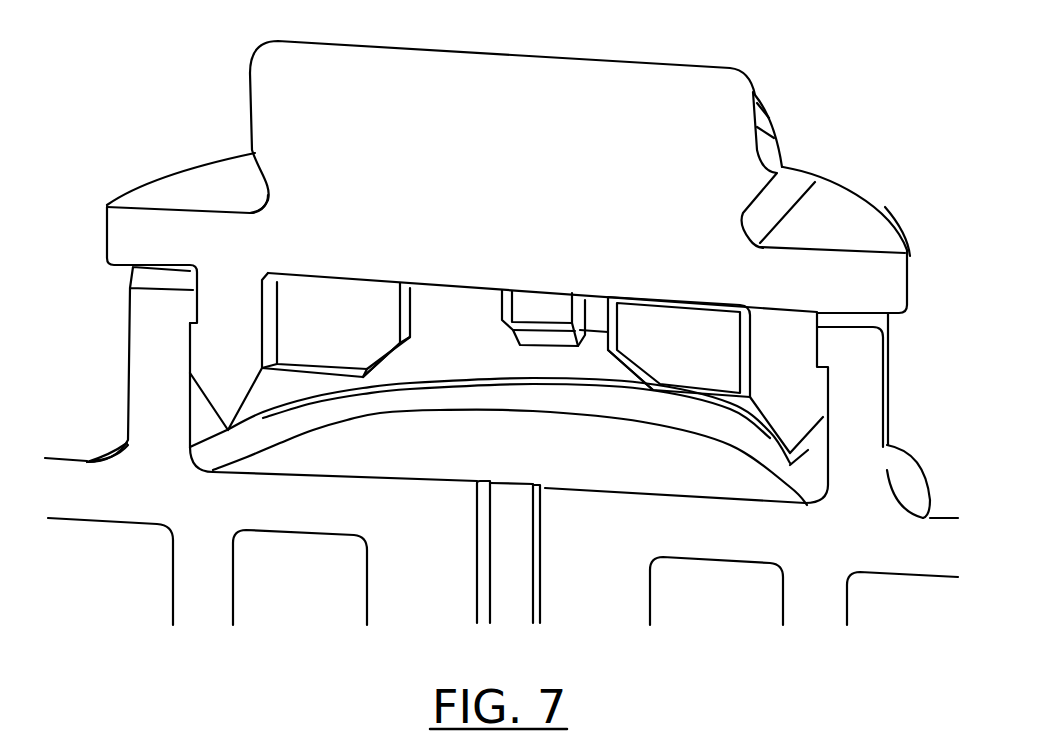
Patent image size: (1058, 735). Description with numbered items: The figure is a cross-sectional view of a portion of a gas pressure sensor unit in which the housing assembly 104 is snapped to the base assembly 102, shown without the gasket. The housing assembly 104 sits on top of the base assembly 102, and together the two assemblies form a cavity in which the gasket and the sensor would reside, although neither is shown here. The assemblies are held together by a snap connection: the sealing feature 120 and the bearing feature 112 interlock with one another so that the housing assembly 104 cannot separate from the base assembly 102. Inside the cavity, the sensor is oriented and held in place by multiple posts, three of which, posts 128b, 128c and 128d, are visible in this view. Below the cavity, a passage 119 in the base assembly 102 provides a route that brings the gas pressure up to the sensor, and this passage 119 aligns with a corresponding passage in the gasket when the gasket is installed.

The base assembly 102 is at (170, 572).
The housing assembly 104 is at (537, 56).
The bearing feature 112 is at (128, 380).
The passage 119 is at (515, 488).
The sealing feature 120 is at (263, 328).
The post 128b is at (402, 358).
The post 128c is at (530, 347).
The post 128d is at (622, 372).